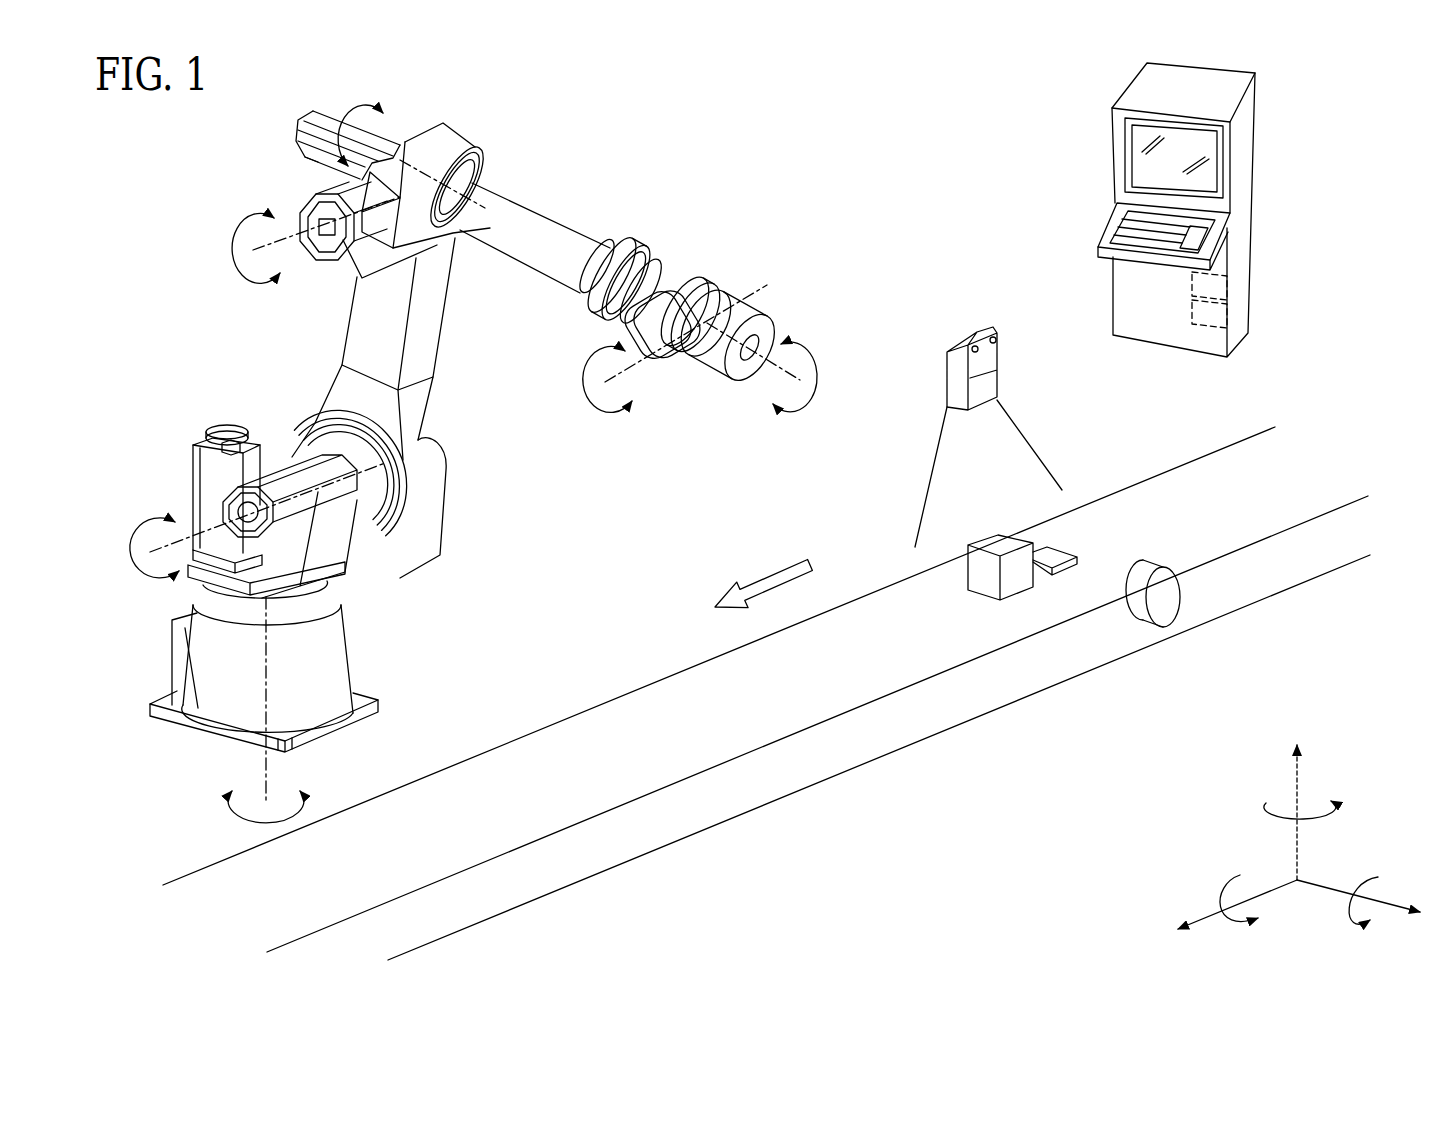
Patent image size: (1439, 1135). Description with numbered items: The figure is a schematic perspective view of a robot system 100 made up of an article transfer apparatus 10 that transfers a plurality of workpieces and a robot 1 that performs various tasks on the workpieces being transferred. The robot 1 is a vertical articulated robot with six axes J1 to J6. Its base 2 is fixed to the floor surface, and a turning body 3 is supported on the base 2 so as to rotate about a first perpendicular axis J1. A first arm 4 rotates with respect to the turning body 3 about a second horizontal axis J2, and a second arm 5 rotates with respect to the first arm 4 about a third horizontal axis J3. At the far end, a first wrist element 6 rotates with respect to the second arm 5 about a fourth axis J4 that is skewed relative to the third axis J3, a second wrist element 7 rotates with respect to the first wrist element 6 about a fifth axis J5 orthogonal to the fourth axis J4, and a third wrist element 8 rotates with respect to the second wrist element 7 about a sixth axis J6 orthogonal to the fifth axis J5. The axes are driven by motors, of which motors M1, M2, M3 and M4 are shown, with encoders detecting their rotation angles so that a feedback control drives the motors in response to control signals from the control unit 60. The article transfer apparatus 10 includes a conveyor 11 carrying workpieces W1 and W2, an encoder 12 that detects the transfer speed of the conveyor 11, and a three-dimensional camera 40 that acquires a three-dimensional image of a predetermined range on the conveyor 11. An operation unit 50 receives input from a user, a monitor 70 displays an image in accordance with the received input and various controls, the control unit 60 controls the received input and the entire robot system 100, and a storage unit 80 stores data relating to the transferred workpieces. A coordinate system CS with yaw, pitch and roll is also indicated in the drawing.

The robot system 100 is at (843, 146).
The robot 1 is at (618, 209).
The base 2 is at (335, 667).
The turning body 3 is at (343, 586).
The first arm 4 is at (423, 438).
The second arm 5 is at (445, 140).
The first wrist element 6 is at (543, 213).
The second wrist element 7 is at (674, 362).
The third wrist element 8 is at (760, 312).
The article transfer apparatus 10 is at (1260, 407).
The conveyor 11 is at (1190, 483).
The encoder (conveyor information acquisition unit) 12 is at (1180, 602).
The three-dimensional camera (photographing unit) 40 is at (1000, 380).
The operation unit (input unit) 50 is at (1108, 216).
The control unit 60 is at (1238, 298).
The monitor (image display unit) 70 is at (1125, 150).
The storage unit 80 is at (1238, 263).
The motor M1 is at (192, 468).
The motor M2 is at (278, 466).
The motor M3 is at (302, 205).
The motor M4 is at (330, 112).
The first perpendicular axis J1 is at (250, 710).
The second horizontal axis J2 is at (241, 523).
The third horizontal axis J3 is at (301, 240).
The fourth axis J4 is at (411, 140).
The fifth axis J5 is at (659, 352).
The sixth axis J6 is at (768, 371).
The workpiece W1 is at (968, 580).
The workpiece W2 is at (1062, 548).
The coordinate system CS is at (1380, 752).